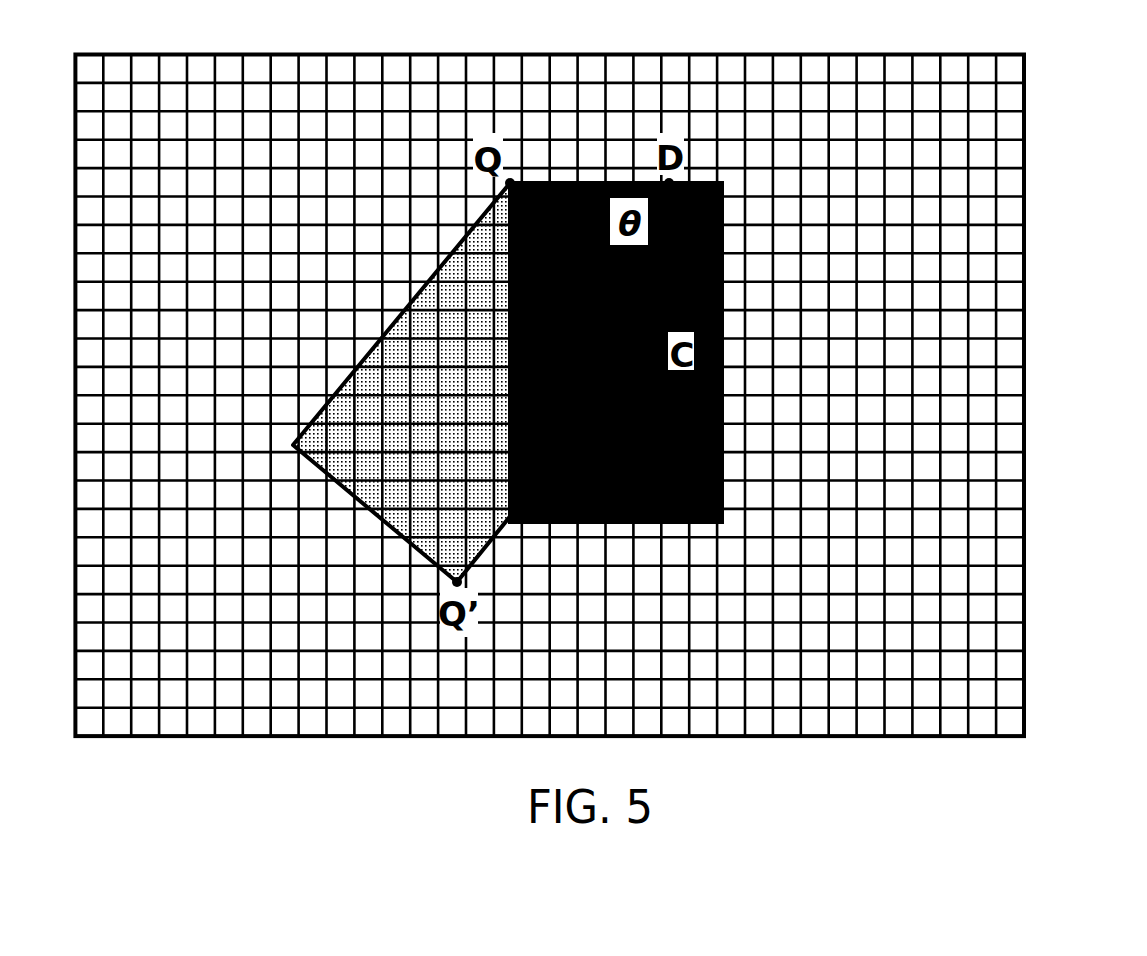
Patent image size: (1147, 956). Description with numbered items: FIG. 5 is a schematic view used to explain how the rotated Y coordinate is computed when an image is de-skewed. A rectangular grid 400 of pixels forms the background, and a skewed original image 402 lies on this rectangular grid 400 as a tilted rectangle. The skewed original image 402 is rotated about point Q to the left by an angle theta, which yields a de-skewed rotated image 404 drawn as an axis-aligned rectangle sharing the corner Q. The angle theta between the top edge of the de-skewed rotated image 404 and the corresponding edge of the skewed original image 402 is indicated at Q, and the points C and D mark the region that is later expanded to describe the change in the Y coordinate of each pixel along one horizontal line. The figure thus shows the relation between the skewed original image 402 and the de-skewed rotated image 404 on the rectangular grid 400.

The rectangular grid 400 is at (978, 218).
The skewed original image 402 is at (397, 507).
The de-skewed rotated image 404 is at (700, 445).